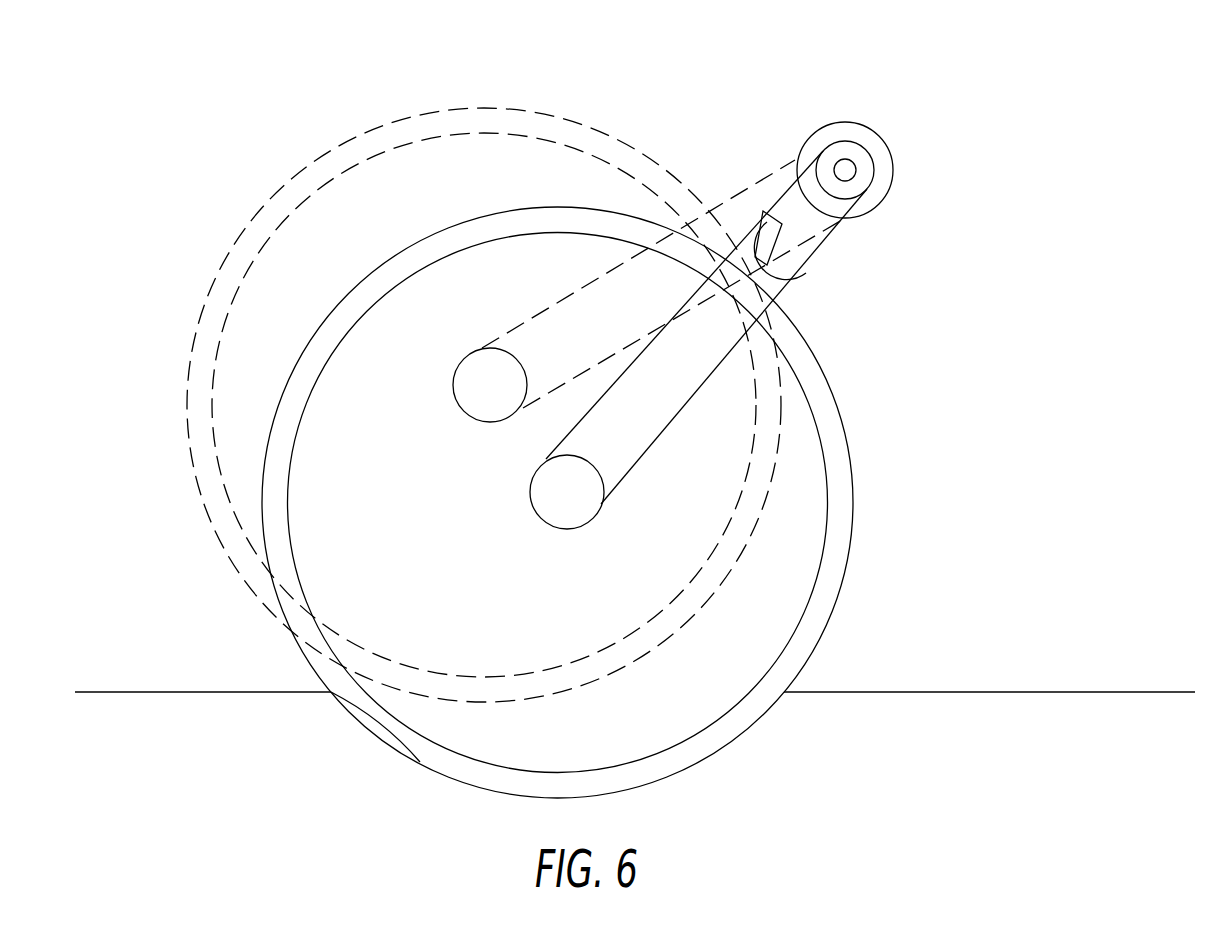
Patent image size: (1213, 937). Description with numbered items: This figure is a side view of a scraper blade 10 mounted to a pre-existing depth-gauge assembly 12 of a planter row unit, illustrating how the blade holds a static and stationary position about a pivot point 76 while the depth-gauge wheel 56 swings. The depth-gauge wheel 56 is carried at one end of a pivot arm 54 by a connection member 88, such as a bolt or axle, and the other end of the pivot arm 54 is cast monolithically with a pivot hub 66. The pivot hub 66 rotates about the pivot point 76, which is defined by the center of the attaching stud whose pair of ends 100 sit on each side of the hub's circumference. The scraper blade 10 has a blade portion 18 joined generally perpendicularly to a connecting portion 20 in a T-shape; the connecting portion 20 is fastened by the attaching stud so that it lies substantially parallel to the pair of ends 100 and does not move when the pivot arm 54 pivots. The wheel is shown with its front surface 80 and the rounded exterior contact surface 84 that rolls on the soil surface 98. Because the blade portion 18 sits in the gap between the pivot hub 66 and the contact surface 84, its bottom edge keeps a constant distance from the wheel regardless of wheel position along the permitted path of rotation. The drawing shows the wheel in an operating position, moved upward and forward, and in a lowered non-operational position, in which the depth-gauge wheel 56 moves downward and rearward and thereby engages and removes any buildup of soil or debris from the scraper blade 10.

The scraper blade 10 is at (872, 258).
The depth-gauge assembly 12 is at (725, 92).
The blade portion 18 is at (808, 273).
The connecting portion 20 is at (812, 162).
The pivot arm 54 is at (760, 213).
The depth-gauge wheel 56 is at (787, 678).
The pivot hub 66 is at (893, 153).
The pivot point 76 is at (846, 168).
The front surface 80 is at (692, 683).
The exterior contact surface 84 is at (393, 750).
The connection member 88 is at (563, 510).
The soil surface 98 is at (1037, 690).
The pair of ends 100 is at (880, 186).